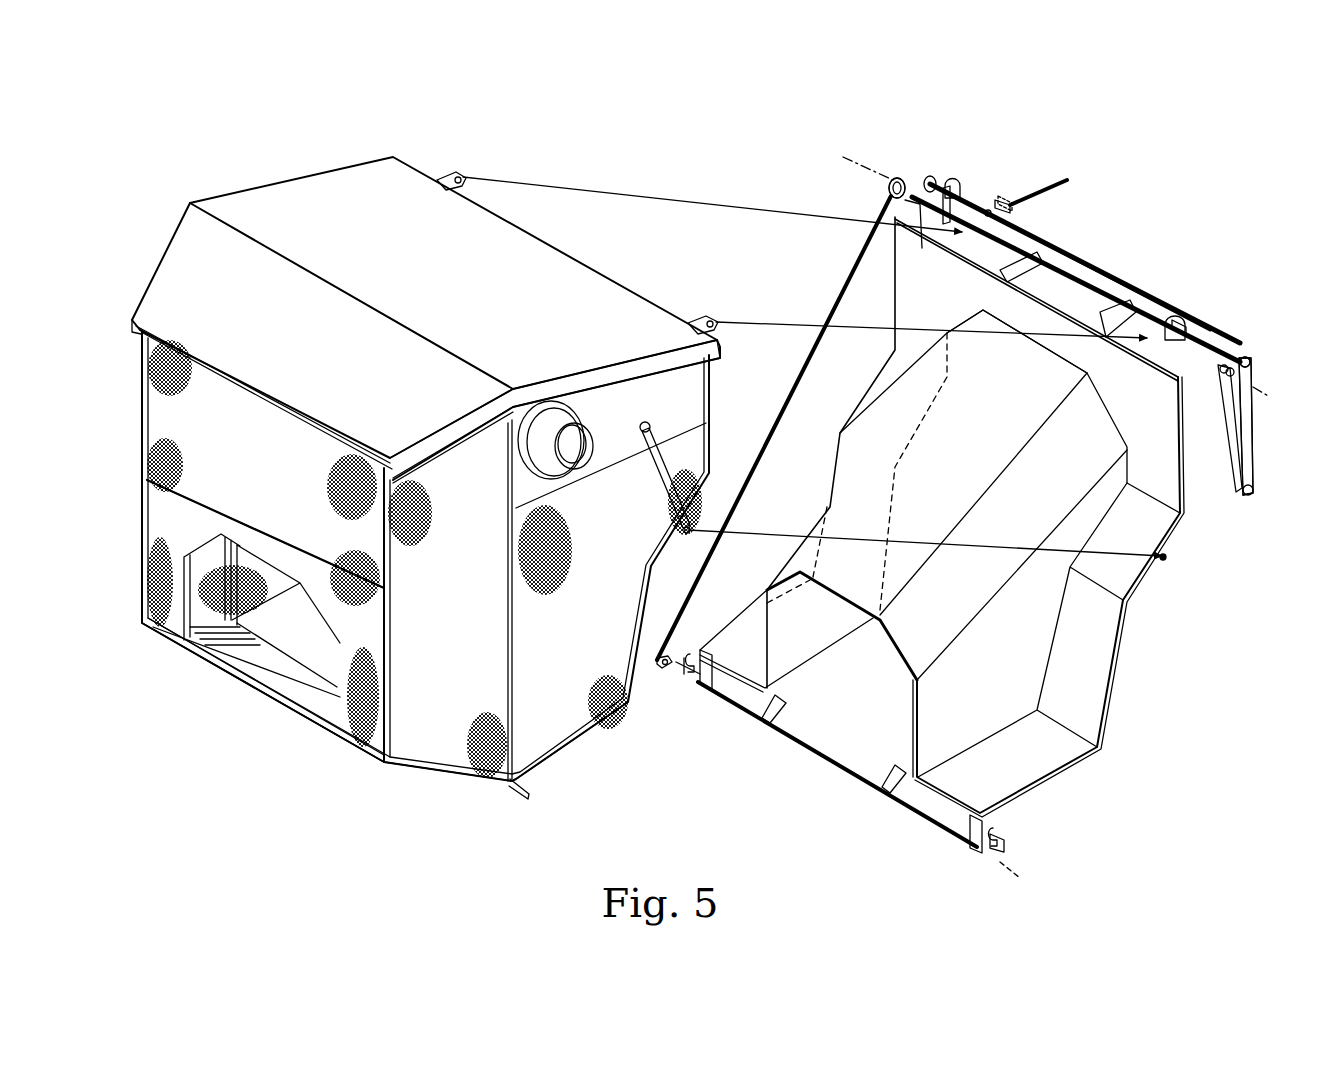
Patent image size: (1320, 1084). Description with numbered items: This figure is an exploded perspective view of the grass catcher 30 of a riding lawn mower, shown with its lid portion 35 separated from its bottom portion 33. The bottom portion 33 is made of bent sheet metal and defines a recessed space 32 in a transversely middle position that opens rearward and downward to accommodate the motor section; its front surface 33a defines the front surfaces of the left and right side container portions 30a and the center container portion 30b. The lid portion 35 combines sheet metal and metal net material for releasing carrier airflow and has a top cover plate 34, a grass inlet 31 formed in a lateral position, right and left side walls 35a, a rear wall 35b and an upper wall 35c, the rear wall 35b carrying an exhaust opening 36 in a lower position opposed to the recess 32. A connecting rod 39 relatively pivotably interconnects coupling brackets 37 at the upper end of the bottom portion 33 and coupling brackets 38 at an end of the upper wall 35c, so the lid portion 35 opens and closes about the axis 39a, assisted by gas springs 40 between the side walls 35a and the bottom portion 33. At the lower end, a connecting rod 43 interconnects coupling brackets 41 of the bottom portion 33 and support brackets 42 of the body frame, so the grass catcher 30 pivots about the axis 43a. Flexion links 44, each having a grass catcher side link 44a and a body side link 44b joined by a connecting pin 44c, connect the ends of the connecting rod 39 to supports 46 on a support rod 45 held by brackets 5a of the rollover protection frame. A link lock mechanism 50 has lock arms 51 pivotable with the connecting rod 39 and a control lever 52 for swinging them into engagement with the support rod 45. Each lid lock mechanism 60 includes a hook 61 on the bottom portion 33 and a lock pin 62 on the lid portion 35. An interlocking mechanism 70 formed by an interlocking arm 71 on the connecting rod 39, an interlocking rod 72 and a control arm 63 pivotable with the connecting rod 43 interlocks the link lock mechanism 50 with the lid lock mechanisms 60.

The grass catcher 30 is at (752, 192).
The side container portion 30a is at (440, 775).
The center container portion 30b is at (296, 455).
The grass inlet 31 is at (582, 457).
The recessed space 32 is at (838, 700).
The bottom portion 33 is at (1136, 663).
The front surface 33a is at (1010, 305).
The top cover plate 34 is at (290, 189).
The lid portion 35 is at (405, 787).
The side wall 35a is at (565, 745).
The rear wall 35b is at (340, 736).
The upper wall 35c is at (258, 375).
The exhaust opening 36 is at (258, 683).
The coupling bracket 37 is at (1050, 272).
The coupling bracket 38 is at (457, 172).
The connecting rod 39 is at (1092, 277).
The axis 39a is at (858, 152).
The gas spring 40 is at (670, 475).
The coupling bracket 41 is at (718, 695).
The support bracket 42 is at (764, 715).
The connecting rod 43 is at (852, 780).
The axis 43a is at (1030, 862).
The flexion link 44 is at (912, 170).
The grass catcher side link 44a is at (917, 210).
The body side link 44b is at (930, 178).
The connecting pin 44c is at (1250, 500).
The support rod 45 is at (1043, 235).
The support 46 is at (1243, 360).
The link lock mechanism 50 is at (1030, 173).
The lock arm 51 is at (967, 186).
The control lever 52 is at (1063, 180).
The bracket 5a is at (1003, 195).
The lid lock mechanism 60 is at (684, 700).
The hook 61 is at (705, 648).
The lock pin 62 is at (516, 792).
The control arm 63 is at (668, 680).
The interlocking mechanism 70 is at (824, 300).
The interlocking arm 71 is at (890, 189).
The interlocking rod 72 is at (783, 412).